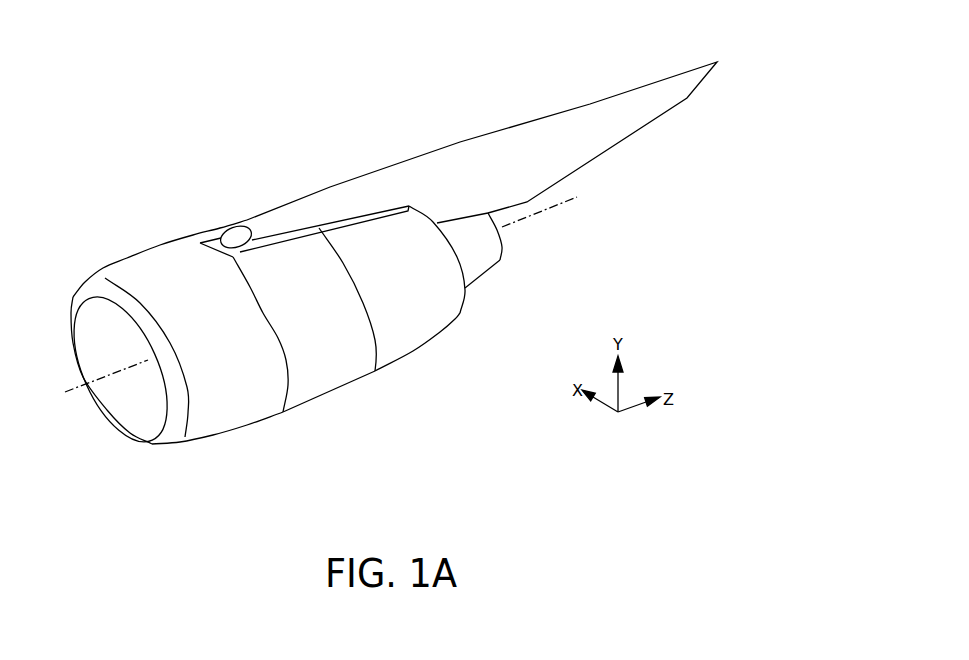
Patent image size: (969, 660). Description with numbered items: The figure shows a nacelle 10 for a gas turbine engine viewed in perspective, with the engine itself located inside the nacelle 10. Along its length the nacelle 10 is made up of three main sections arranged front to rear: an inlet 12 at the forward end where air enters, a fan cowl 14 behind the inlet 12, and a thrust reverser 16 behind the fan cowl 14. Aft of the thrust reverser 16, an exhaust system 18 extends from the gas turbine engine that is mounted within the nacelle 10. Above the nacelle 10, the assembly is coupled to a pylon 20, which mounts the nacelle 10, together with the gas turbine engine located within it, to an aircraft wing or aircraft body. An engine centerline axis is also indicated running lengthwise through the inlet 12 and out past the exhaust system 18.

The nacelle 10 is at (153, 113).
The inlet 12 is at (134, 279).
The fan cowl 14 is at (357, 370).
The thrust reverser 16 is at (417, 327).
The exhaust system 18 is at (483, 253).
The pylon 20 is at (418, 168).